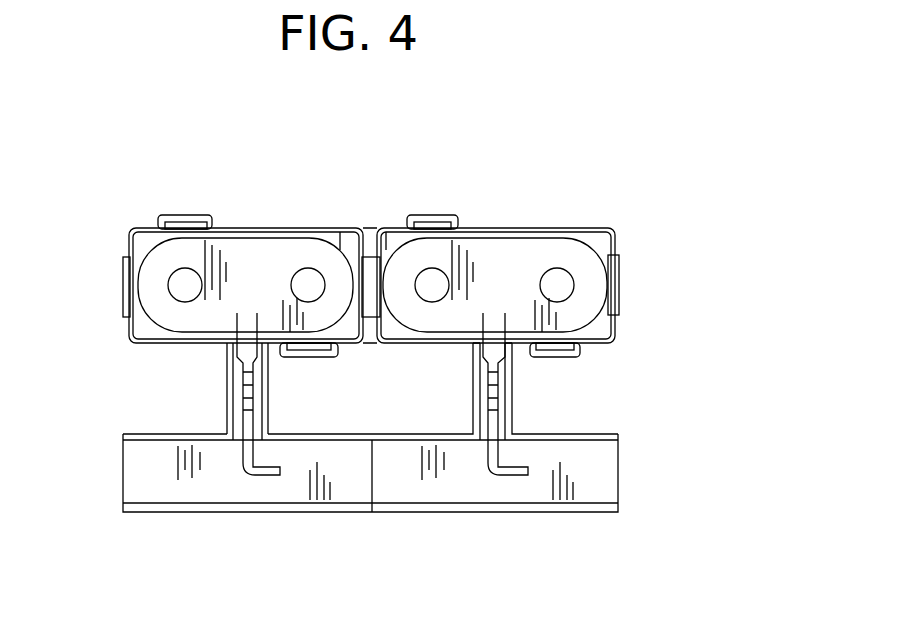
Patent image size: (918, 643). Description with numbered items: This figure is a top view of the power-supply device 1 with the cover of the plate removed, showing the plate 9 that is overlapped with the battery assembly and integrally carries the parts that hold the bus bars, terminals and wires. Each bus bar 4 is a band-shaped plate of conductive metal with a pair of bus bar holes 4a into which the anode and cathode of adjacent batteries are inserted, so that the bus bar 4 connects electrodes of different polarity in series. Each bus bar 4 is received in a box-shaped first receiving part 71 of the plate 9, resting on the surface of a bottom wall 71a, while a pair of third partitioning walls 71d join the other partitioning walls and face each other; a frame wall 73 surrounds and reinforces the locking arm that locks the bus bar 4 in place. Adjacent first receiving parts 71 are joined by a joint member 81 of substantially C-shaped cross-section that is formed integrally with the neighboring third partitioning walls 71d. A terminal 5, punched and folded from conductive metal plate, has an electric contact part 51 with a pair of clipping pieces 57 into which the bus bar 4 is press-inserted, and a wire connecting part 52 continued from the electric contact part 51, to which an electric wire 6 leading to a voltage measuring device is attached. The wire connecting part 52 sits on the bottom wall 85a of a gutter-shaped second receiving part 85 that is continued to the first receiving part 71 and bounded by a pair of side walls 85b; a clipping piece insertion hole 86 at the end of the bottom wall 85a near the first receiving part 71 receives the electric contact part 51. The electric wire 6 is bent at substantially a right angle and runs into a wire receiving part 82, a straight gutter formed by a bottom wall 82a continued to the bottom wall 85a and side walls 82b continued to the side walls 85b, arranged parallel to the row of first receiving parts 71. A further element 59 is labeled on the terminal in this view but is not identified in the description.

The power-supply device 1 is at (662, 147).
The plate 9 is at (648, 206).
The bus bar 4 is at (278, 240).
The bus bar hole 4a is at (440, 280).
The first receiving part 71 is at (311, 226).
The bottom wall 71a is at (145, 240).
The third partitioning wall 71d is at (346, 232).
The frame wall 73 is at (187, 217).
The joint member 81 is at (373, 230).
The second receiving part 85 is at (224, 385).
The bottom wall 85a is at (258, 418).
The side wall 85b is at (226, 416).
The clipping piece insertion hole 86 is at (260, 357).
The terminal 5 is at (705, 458).
The electric contact part 51 is at (475, 316).
The wire connecting part 52 is at (508, 383).
The clipping piece 57 is at (472, 344).
The bus bar joint portion 59 is at (500, 398).
The wire receiving part 82 is at (182, 514).
The bottom wall 82a is at (335, 490).
The side wall 82b is at (364, 432).
The electric wire 6 is at (265, 478).